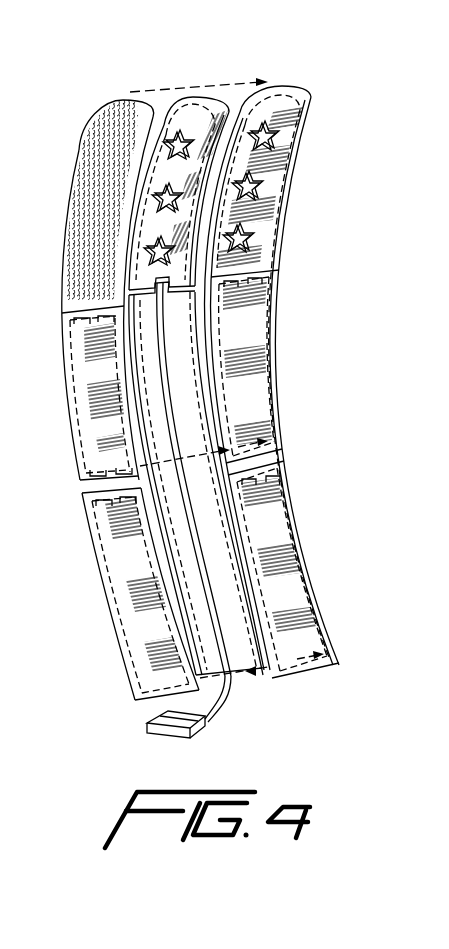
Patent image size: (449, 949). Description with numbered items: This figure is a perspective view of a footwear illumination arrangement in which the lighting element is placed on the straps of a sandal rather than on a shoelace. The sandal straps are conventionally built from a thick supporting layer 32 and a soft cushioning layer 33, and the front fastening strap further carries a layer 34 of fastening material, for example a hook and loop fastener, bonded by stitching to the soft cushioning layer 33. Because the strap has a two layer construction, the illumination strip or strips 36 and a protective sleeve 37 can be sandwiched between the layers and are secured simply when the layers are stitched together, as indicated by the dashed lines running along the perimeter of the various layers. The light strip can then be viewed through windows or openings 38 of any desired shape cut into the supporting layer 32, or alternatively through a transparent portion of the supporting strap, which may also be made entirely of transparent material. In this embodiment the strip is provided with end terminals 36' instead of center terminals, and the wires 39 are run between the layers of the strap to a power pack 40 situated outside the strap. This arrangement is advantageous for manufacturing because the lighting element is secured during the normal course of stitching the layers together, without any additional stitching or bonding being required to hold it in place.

The supporting layer 32 is at (240, 306).
The soft cushioning layer 33 is at (100, 448).
The layer of fastening material 34 is at (94, 128).
The illumination strip 36 is at (203, 147).
The end terminals 36' is at (227, 260).
The protective sleeve 37 is at (165, 108).
The windows or openings 38 is at (278, 158).
The wires 39 is at (172, 410).
The power pack 40 is at (150, 728).